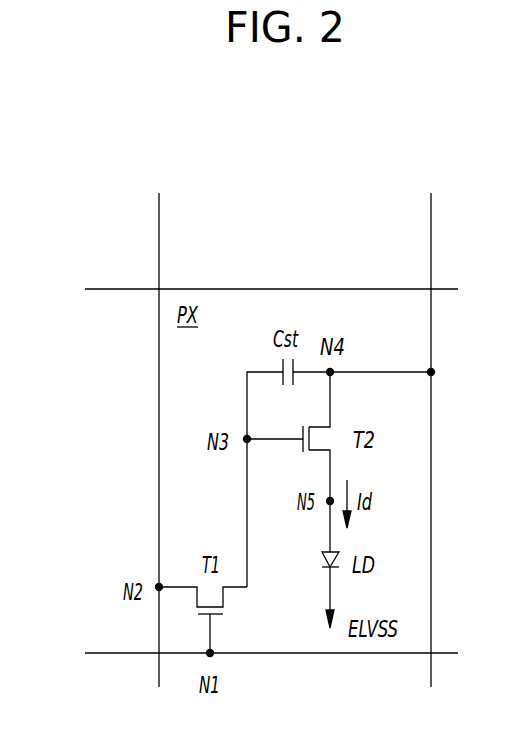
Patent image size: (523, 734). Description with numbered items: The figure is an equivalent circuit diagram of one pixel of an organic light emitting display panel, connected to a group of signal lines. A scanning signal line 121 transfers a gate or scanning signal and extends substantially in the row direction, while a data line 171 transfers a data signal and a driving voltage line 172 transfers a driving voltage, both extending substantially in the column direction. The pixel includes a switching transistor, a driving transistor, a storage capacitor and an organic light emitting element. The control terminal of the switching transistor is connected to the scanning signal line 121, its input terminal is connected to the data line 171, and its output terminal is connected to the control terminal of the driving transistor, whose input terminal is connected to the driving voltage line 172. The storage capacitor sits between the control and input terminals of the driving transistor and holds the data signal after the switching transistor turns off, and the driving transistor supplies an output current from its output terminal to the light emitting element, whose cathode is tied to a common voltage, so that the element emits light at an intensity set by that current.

The data line 171 is at (160, 424).
The driving voltage line 172 is at (434, 424).
The scanning signal line 121 is at (252, 657).